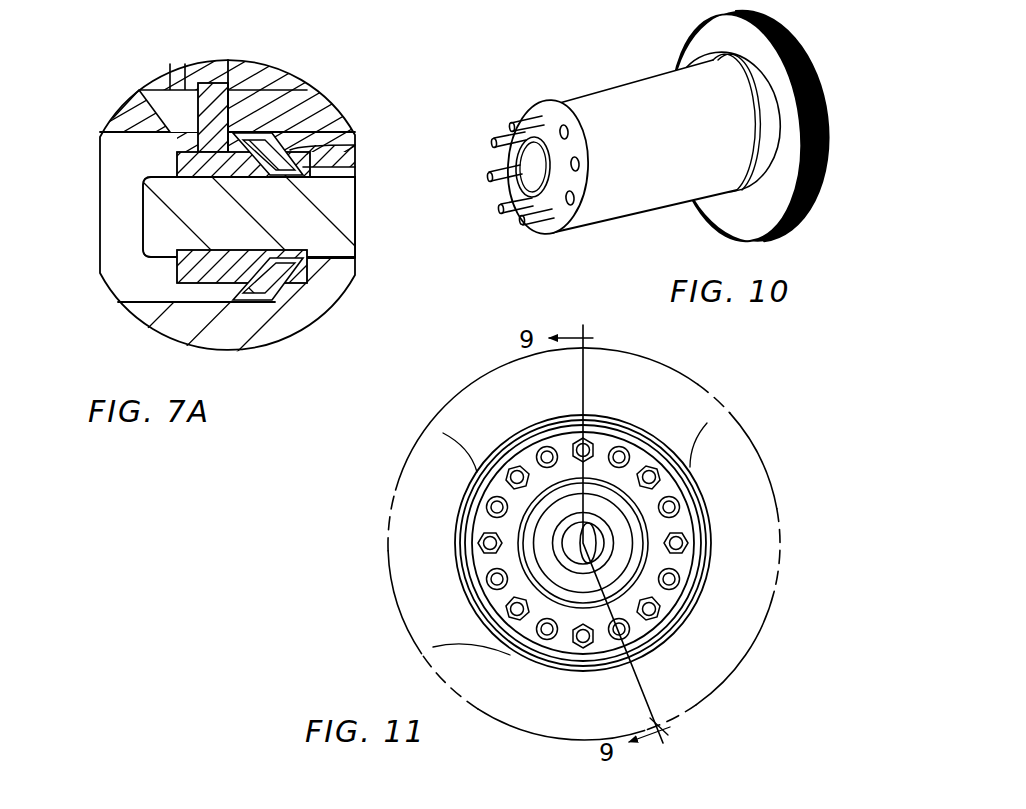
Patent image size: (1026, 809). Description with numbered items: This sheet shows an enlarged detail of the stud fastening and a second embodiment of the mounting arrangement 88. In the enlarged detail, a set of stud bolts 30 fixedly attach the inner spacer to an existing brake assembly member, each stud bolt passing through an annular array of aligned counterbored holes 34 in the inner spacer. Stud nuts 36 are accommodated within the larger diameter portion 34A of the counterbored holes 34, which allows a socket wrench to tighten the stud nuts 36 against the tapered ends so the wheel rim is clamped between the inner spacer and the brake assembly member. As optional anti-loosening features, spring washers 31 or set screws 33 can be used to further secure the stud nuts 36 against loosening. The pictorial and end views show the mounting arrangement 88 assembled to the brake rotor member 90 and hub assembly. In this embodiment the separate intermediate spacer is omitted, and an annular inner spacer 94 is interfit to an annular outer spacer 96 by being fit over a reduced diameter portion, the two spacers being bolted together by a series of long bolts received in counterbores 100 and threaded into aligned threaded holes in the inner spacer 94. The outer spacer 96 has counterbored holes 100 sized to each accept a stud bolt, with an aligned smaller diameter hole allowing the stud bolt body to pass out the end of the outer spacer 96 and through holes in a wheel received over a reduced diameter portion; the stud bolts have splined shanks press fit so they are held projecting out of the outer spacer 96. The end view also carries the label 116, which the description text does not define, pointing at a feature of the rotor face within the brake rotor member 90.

In FIG. 7A, the stud bolts 30 is at (328, 222).
In FIG. 7A, the spring washers 31 is at (352, 146).
In FIG. 7A, the set screws 33 is at (245, 108).
In FIG. 7A, the counterbored holes 34 is at (110, 118).
In FIG. 7A, the larger diameter portion 34A is at (110, 218).
In FIG. 7A, the stud nuts 36 is at (139, 90).
In FIG. 10, the mounting arrangement 88 is at (518, 90).
In FIG. 10, the brake rotor member 90 is at (810, 92).
In FIG. 11, the brake rotor member 90 is at (386, 573).
In FIG. 10, the inner spacer 94 is at (700, 187).
In FIG. 10, the outer spacer 96 is at (580, 107).
In FIG. 11, the counterbored holes 100 is at (526, 430).
In FIG. 11, the rotor hat 116 is at (490, 627).